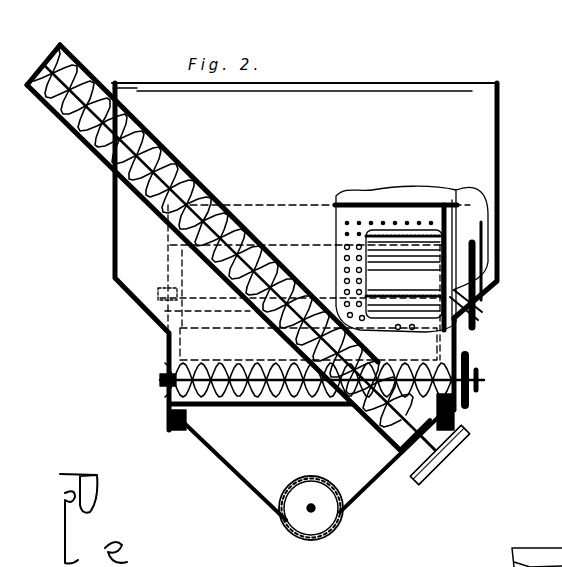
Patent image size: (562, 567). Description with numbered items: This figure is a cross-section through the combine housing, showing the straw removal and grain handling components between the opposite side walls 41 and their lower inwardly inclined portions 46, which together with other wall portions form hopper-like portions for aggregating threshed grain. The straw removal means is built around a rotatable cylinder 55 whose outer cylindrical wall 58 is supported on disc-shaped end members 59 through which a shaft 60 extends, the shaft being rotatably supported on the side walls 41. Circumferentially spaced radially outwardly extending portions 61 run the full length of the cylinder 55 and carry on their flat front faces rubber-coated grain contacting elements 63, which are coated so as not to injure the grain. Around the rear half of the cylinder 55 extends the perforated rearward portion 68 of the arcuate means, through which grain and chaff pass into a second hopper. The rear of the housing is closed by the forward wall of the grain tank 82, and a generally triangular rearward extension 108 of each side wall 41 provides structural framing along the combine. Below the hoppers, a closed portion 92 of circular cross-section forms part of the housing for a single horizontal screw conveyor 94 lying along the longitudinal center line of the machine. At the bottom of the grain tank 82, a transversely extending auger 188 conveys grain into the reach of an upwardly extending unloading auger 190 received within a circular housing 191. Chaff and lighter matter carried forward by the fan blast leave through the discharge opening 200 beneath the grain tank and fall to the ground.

The side walls 41 is at (167, 233).
The lower inwardly inclined portions 46 is at (241, 477).
The cylinder 55 is at (400, 237).
The outer cylindrical wall 58 is at (428, 270).
The disc-shaped end members 59 is at (180, 260).
The shaft 60 is at (245, 312).
The radially outwardly extending portions 61 is at (420, 258).
The grain contacting elements 63 is at (427, 240).
The rearward portion of the arcuate means 68 is at (377, 220).
The grain tank 82 is at (500, 127).
The closed portion 92 is at (343, 525).
The screw conveyor 94 is at (298, 524).
The rearward extension 108 is at (167, 347).
The transversely extending auger 188 is at (246, 368).
The unloading auger 190 is at (178, 152).
The circular housing 191 is at (203, 177).
The discharge opening 200 is at (322, 399).